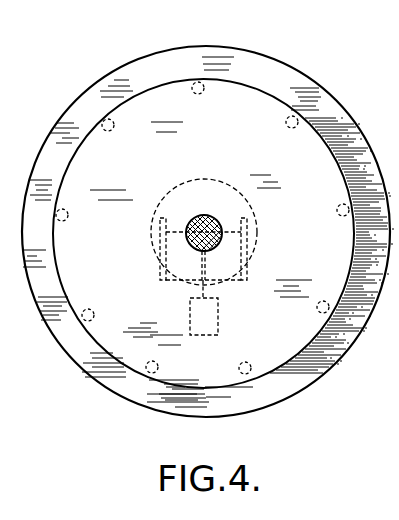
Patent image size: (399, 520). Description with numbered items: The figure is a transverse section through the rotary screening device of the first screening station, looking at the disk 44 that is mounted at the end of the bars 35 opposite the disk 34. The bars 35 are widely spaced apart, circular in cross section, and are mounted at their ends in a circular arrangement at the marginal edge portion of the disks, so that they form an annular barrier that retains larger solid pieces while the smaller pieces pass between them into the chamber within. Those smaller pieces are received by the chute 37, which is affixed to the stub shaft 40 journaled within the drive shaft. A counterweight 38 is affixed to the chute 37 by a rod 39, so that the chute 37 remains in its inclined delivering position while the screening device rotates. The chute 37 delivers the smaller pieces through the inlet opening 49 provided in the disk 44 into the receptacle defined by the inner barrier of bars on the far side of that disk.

The disk 34 is at (163, 103).
The disk 44 is at (333, 117).
The widest spaced apart parallel bars 35 is at (66, 220).
The inlet opening 49 is at (198, 179).
The stub shaft 40 is at (207, 217).
The chute 37 is at (233, 255).
The rod 39 is at (200, 290).
The counterweight 38 is at (215, 318).